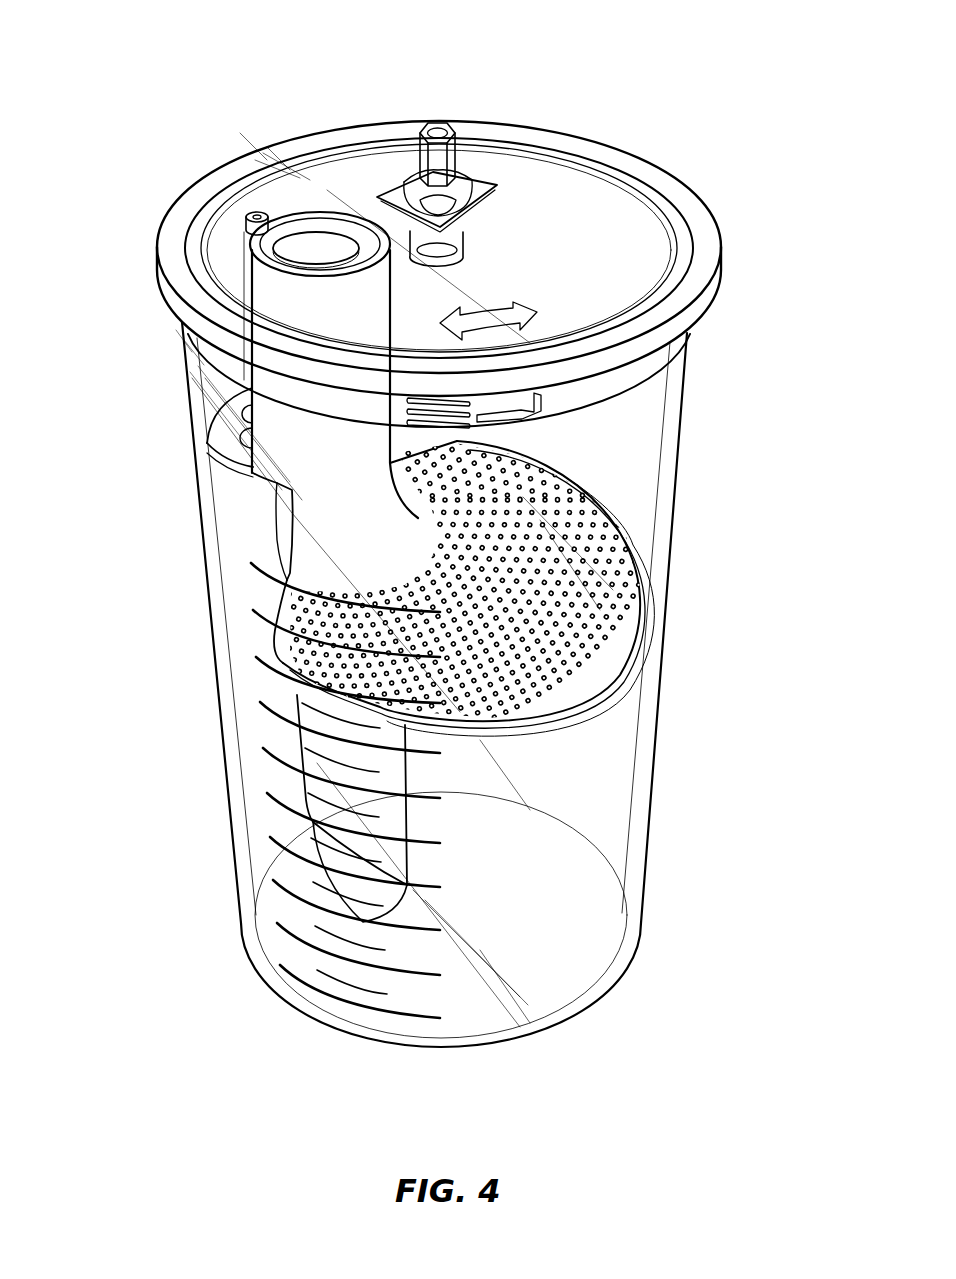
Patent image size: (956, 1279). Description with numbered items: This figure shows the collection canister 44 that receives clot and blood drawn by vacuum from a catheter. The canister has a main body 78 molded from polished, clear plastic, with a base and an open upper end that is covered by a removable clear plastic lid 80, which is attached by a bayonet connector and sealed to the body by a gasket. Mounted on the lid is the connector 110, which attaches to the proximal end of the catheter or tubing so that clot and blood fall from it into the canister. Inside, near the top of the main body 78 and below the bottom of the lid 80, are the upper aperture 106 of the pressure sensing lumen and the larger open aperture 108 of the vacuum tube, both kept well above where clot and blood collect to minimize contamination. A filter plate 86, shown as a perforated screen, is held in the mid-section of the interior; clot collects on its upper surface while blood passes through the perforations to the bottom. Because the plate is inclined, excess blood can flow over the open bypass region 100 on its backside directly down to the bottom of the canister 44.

The collection canister 44 is at (126, 442).
The main body 78 is at (263, 687).
The lid 80 is at (637, 233).
The filter plate 86 is at (605, 622).
The bypass region 100 is at (232, 605).
The upper aperture 106 is at (258, 212).
The open aperture 108 is at (315, 240).
The connector 110 is at (484, 110).